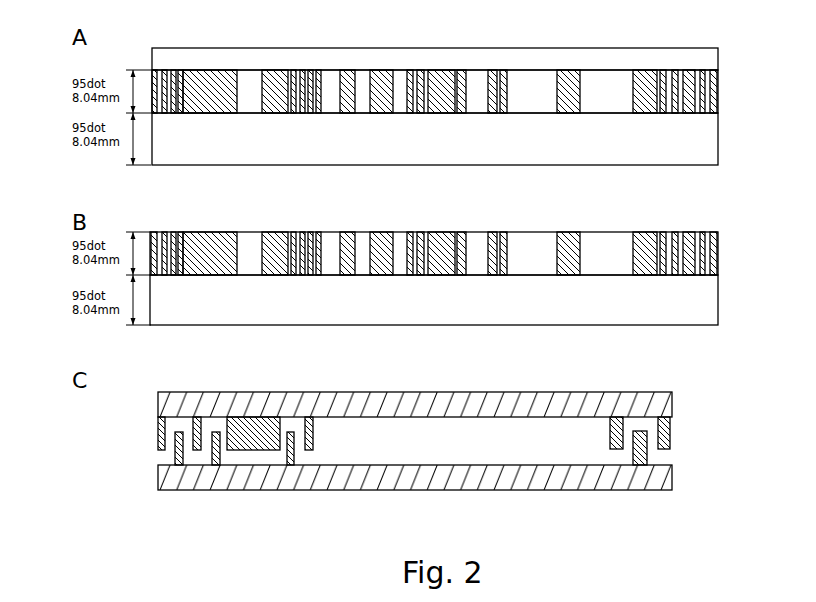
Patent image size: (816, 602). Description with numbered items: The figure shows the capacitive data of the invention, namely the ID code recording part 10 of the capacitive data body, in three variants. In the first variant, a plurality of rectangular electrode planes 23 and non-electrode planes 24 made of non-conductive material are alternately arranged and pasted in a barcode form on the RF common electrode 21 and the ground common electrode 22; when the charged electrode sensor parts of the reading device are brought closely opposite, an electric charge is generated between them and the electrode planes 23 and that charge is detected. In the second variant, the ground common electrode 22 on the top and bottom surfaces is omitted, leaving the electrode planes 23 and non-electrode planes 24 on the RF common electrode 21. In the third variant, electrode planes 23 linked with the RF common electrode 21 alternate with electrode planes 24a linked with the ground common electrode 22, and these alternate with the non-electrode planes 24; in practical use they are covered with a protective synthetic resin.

The ID code recording part 10 is at (727, 92).
The RF common electrode 21 is at (716, 134).
The ground common electrode 22 is at (716, 56).
The electrode planes 23 is at (645, 71).
The non-electrode planes 24 is at (607, 82).
The electrode planes linked with the ground common electrode 24a is at (624, 425).